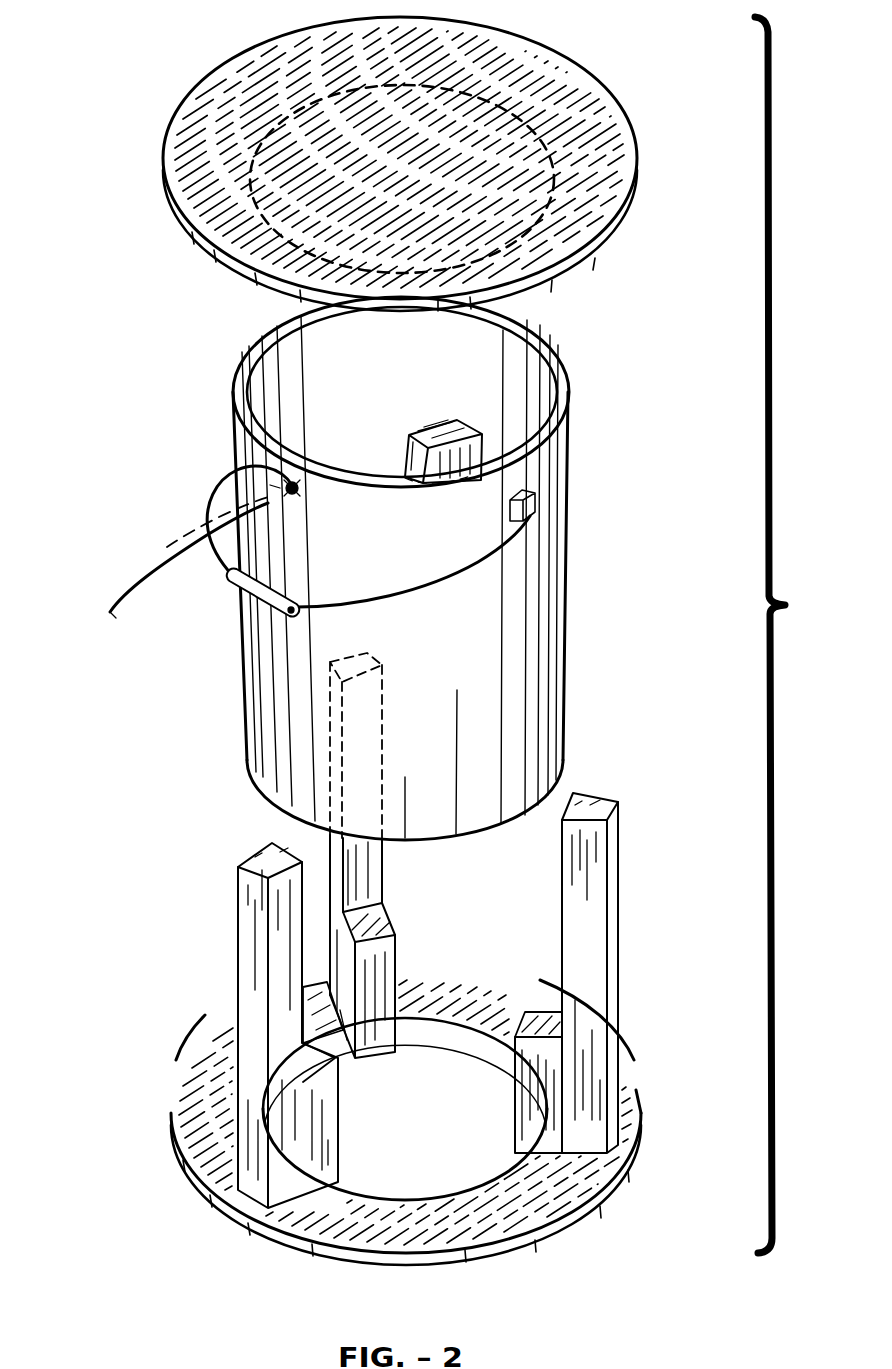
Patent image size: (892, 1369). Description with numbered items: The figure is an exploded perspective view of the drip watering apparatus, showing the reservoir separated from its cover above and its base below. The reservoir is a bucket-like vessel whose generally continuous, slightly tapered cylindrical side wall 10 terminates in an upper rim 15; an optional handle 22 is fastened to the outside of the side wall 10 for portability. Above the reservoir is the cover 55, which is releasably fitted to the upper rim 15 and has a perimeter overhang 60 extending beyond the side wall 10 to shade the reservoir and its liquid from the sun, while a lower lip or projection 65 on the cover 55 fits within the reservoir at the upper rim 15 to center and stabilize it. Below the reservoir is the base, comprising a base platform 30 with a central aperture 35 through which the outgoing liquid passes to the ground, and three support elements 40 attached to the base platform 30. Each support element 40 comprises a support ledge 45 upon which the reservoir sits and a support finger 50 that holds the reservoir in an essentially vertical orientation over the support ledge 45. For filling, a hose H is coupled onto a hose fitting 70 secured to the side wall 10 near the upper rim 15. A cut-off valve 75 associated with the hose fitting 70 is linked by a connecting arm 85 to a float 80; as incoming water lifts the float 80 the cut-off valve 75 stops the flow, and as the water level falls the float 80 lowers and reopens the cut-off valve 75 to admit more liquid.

The side wall 10 is at (541, 634).
The upper rim 15 is at (562, 396).
The handle 22 is at (250, 612).
The base platform 30 is at (484, 1252).
The central aperture 35 is at (499, 1173).
The support element 40 is at (400, 951).
The support ledge 45 is at (386, 906).
The support finger 50 is at (374, 880).
The cover 55 is at (298, 76).
The perimeter overhang 60 is at (216, 274).
The lower lip or projection 65 is at (578, 262).
The hose fitting 70 is at (223, 480).
The cut-off valve 75 is at (284, 478).
The float 80 is at (462, 419).
The connecting arm 85 is at (413, 471).
The hose H is at (165, 545).